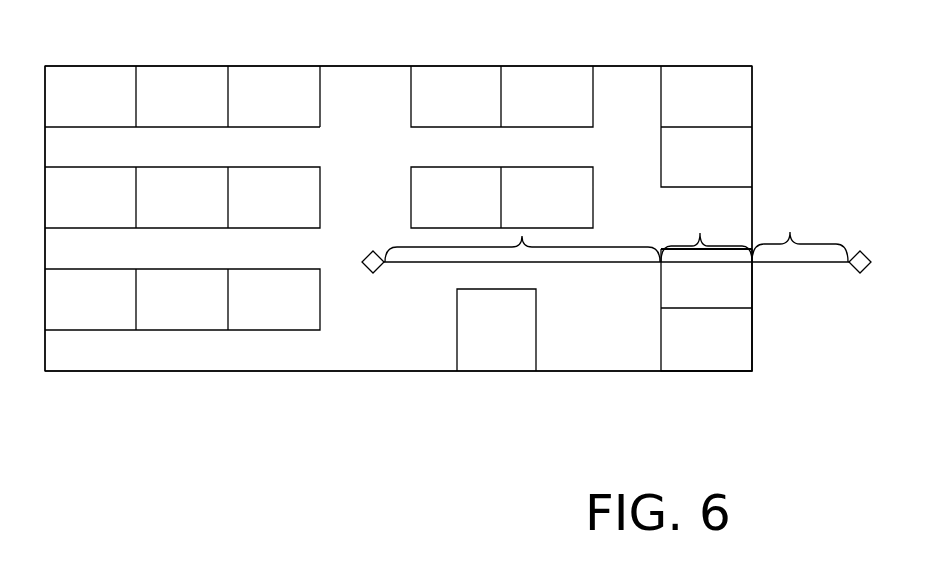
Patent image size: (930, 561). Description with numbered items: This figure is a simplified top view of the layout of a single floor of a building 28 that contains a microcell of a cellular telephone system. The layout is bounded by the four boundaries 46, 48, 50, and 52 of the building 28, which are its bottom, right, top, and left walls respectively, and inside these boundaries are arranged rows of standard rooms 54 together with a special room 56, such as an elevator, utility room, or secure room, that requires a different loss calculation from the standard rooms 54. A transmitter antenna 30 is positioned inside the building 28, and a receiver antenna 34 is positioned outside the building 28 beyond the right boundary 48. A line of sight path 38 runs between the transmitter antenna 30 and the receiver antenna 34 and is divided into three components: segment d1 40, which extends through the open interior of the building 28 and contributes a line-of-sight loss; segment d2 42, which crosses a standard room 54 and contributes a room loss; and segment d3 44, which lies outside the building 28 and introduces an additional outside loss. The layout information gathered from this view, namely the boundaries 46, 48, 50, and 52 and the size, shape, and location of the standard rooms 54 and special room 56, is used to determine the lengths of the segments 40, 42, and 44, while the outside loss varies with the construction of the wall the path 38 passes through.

The building 28 is at (380, 397).
The transmitter antenna 30 is at (363, 272).
The receiver antenna 34 is at (851, 272).
The line of sight path 38 is at (595, 262).
The segment d1 40 is at (522, 236).
The segment d2 42 is at (700, 233).
The segment d3 44 is at (790, 232).
The boundary 46 is at (263, 372).
The boundary 48 is at (752, 203).
The boundary 50 is at (333, 66).
The boundary 52 is at (45, 145).
The standard room 54 is at (742, 298).
The special room 56 is at (481, 372).